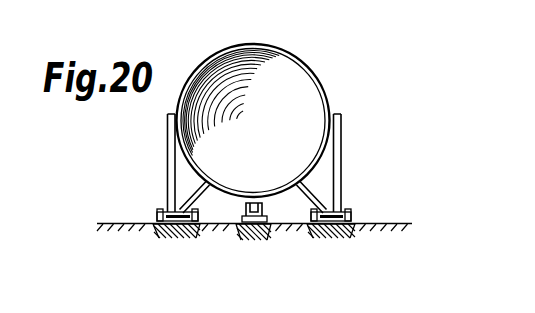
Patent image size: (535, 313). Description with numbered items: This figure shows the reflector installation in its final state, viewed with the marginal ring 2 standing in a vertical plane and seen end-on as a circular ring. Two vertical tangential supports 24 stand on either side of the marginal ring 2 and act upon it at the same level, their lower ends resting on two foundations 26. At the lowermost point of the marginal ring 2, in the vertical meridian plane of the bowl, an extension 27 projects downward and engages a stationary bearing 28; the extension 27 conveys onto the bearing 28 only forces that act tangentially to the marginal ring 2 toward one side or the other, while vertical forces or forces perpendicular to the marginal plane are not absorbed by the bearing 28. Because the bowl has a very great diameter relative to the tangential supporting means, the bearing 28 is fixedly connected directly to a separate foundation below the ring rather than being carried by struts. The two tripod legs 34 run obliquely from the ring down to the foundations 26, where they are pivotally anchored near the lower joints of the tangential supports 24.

The marginal ring 2 is at (309, 74).
The tangential support 24 is at (167, 147).
The foundation 26 is at (177, 234).
The extension 27 is at (255, 203).
The stationary bearing 28 is at (246, 219).
The tripod leg 34 is at (253, 199).